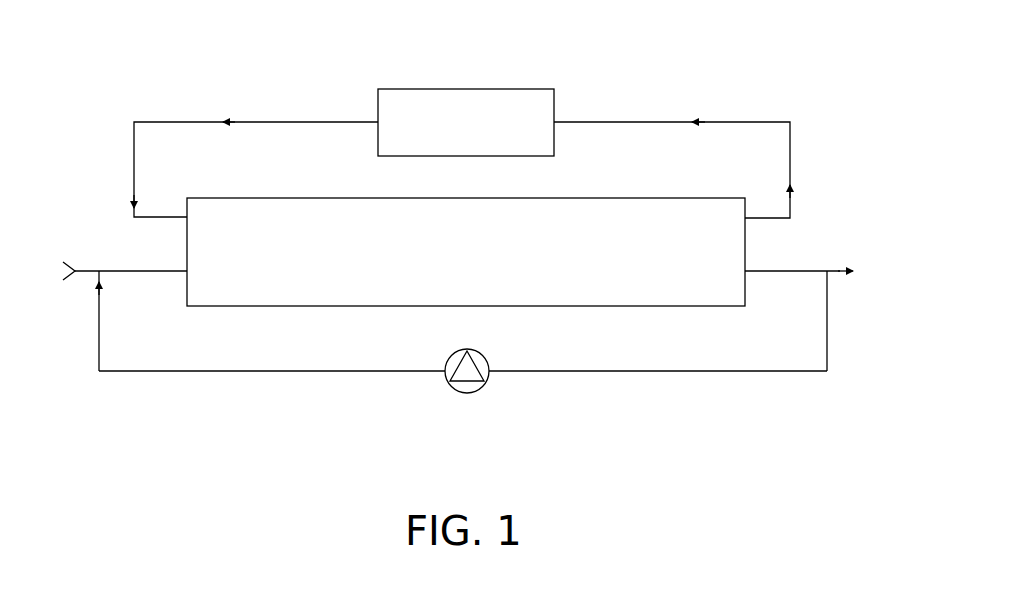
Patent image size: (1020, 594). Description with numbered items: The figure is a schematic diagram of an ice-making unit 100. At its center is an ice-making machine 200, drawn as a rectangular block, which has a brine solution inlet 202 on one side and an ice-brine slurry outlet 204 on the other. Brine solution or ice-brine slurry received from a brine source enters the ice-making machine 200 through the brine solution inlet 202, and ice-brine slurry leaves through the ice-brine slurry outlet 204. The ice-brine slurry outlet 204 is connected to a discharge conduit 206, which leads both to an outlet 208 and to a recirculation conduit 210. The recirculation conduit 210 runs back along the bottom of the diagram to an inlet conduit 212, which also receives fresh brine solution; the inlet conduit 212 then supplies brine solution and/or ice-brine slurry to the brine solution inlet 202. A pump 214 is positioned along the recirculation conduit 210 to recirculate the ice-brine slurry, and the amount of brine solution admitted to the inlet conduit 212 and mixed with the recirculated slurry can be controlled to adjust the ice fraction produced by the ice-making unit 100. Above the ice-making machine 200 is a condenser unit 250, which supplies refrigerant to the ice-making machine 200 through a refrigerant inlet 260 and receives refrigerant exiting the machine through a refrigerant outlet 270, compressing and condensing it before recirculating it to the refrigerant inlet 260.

The ice-making unit 100 is at (809, 88).
The ice-making machine 200 is at (575, 190).
The condenser unit 250 is at (423, 89).
The refrigerant inlet 260 is at (178, 216).
The refrigerant outlet 270 is at (752, 217).
The inlet conduit 212 is at (113, 271).
The brine solution inlet 202 is at (187, 275).
The recirculation conduit 210 is at (828, 371).
The discharge conduit 206 is at (780, 271).
The ice-brine slurry outlet 204 is at (748, 273).
The outlet 208 is at (845, 272).
The pump 214 is at (455, 390).